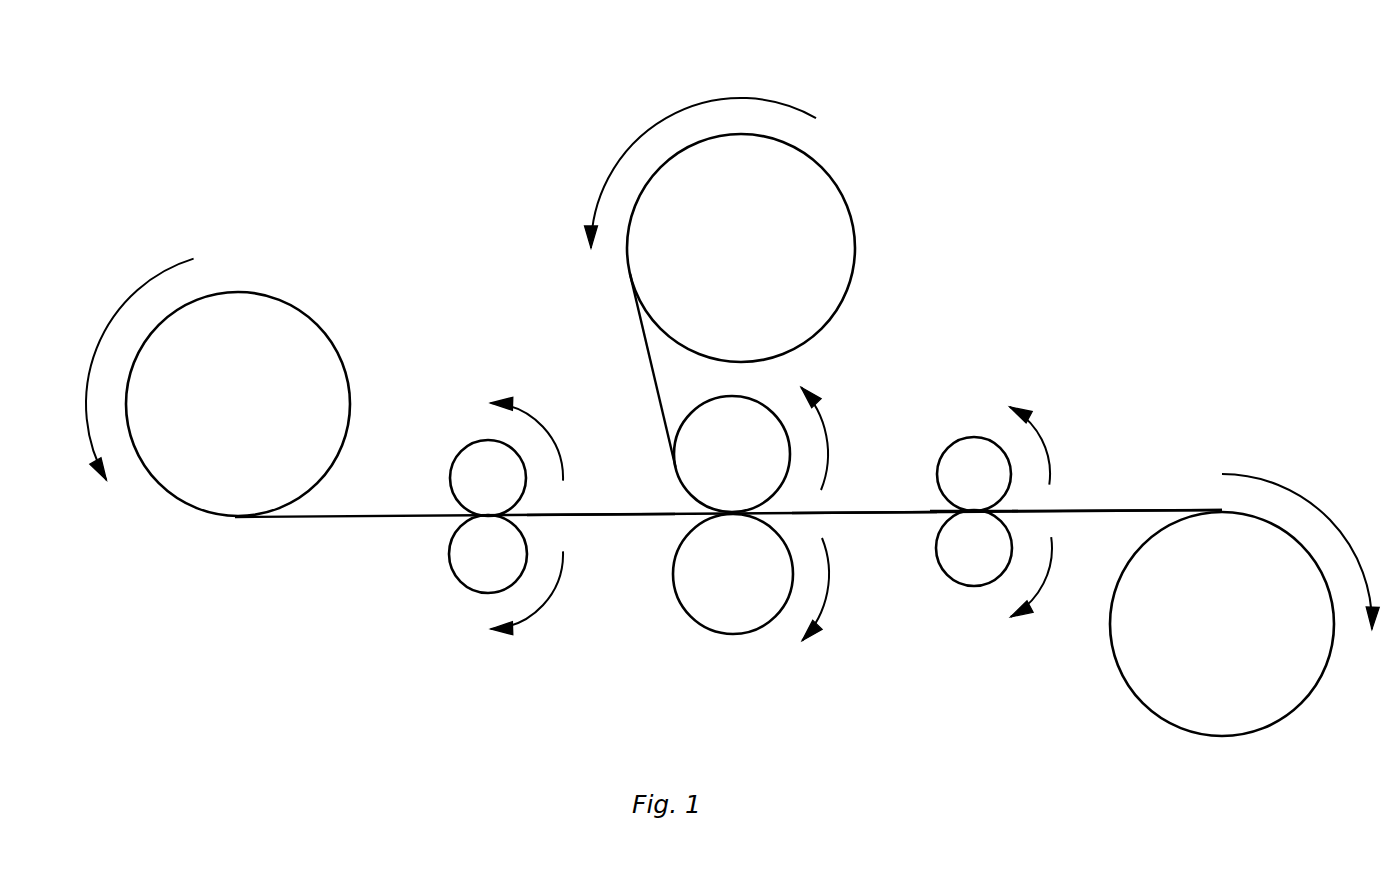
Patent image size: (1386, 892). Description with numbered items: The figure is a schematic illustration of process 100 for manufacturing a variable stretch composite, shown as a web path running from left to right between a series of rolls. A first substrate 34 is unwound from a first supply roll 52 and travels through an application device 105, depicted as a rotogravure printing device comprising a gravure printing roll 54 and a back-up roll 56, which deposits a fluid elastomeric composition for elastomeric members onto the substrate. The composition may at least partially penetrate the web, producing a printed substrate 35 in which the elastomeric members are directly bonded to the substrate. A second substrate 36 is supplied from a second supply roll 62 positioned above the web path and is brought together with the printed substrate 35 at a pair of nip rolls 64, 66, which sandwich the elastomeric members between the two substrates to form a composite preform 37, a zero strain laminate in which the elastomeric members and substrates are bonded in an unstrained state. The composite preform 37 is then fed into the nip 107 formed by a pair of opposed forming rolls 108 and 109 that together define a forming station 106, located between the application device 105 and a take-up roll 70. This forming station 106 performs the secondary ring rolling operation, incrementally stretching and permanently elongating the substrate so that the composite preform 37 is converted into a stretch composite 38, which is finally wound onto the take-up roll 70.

The process 100 is at (320, 178).
The application device 105 is at (483, 328).
The forming station 106 is at (990, 357).
The first supply roll 52 is at (295, 305).
The second supply roll 62 is at (842, 198).
The take-up roll 70 is at (1198, 735).
The first substrate 34 is at (365, 517).
The printed substrate 35 is at (613, 515).
The second substrate 36 is at (653, 363).
The composite preform 37 is at (860, 512).
The stretch composite 38 is at (1093, 510).
The gravure printing roll 54 is at (460, 450).
The back-up roll 56 is at (463, 585).
The nip roll 64 is at (683, 493).
The nip roll 66 is at (713, 633).
The forming roll 108 is at (942, 453).
The forming roll 109 is at (943, 567).
The nip 107 is at (926, 531).